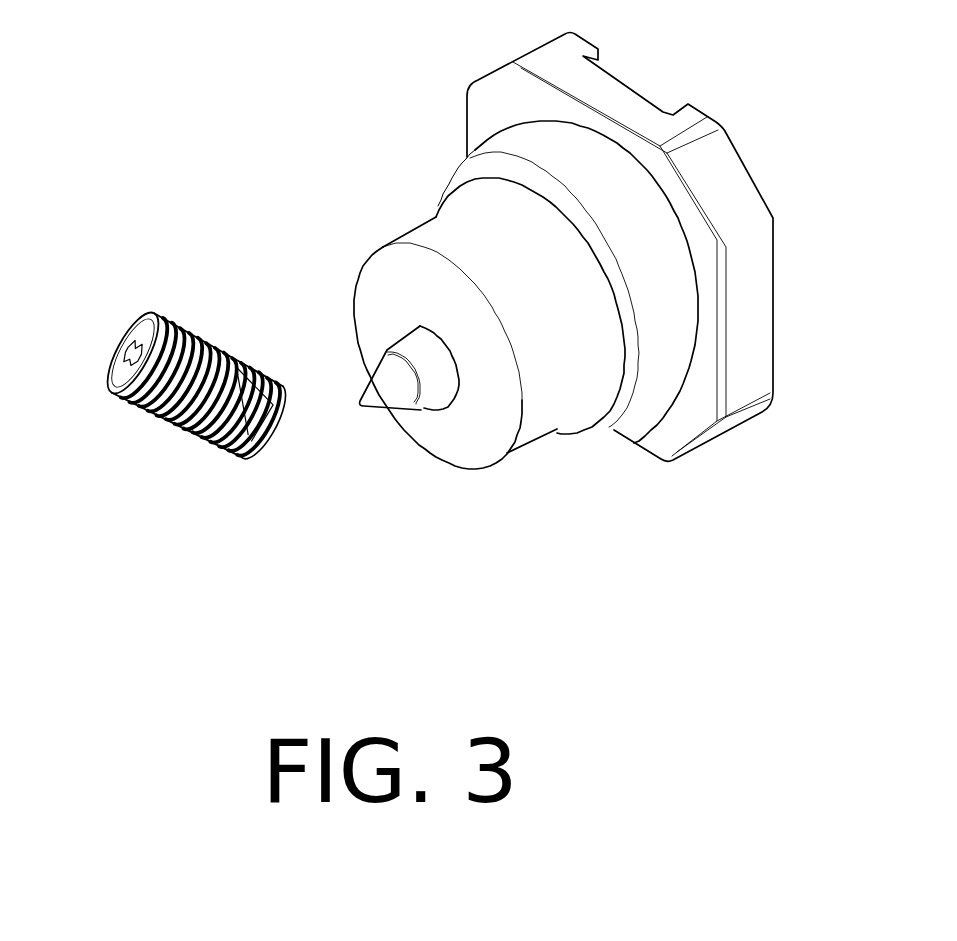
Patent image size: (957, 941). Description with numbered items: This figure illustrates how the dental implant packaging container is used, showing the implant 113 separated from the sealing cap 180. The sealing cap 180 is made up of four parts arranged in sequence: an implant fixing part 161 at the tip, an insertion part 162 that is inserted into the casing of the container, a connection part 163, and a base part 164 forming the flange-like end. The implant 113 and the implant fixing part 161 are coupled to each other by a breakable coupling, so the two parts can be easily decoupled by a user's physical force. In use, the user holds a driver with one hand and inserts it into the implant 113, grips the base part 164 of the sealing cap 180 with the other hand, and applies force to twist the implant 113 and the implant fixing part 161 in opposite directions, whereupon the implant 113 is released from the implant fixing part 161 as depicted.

The implant 113 is at (197, 333).
The implant fixing part 161 is at (411, 452).
The insertion part 162 is at (530, 410).
The connection part 163 is at (650, 383).
The base part 164 is at (737, 393).
The sealing cap 180 is at (563, 335).